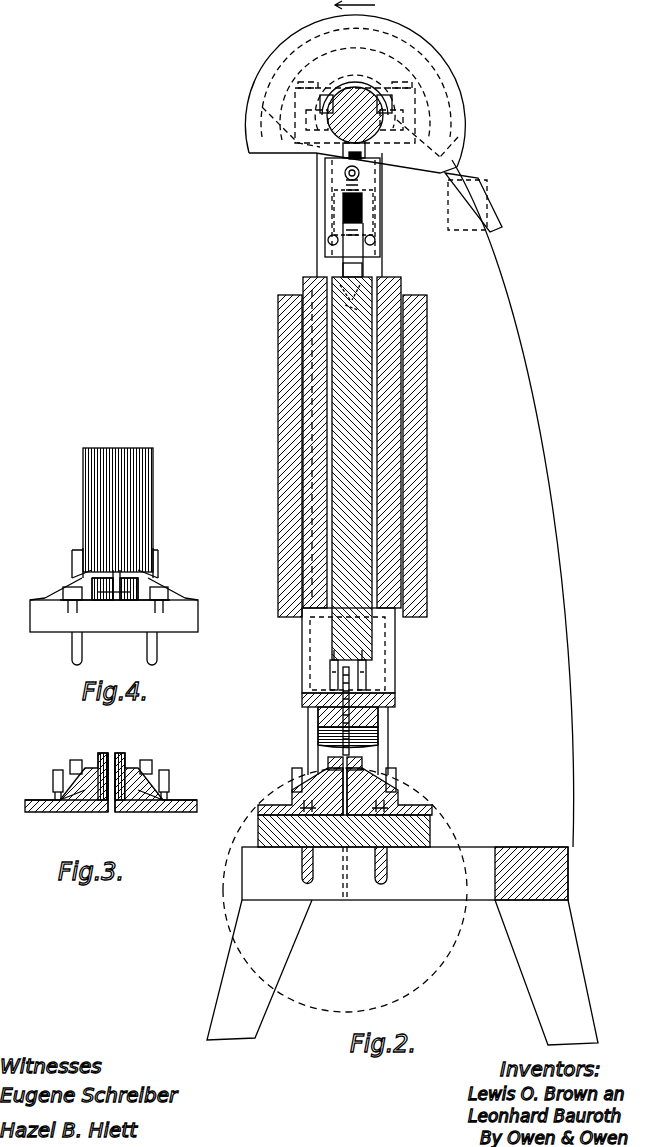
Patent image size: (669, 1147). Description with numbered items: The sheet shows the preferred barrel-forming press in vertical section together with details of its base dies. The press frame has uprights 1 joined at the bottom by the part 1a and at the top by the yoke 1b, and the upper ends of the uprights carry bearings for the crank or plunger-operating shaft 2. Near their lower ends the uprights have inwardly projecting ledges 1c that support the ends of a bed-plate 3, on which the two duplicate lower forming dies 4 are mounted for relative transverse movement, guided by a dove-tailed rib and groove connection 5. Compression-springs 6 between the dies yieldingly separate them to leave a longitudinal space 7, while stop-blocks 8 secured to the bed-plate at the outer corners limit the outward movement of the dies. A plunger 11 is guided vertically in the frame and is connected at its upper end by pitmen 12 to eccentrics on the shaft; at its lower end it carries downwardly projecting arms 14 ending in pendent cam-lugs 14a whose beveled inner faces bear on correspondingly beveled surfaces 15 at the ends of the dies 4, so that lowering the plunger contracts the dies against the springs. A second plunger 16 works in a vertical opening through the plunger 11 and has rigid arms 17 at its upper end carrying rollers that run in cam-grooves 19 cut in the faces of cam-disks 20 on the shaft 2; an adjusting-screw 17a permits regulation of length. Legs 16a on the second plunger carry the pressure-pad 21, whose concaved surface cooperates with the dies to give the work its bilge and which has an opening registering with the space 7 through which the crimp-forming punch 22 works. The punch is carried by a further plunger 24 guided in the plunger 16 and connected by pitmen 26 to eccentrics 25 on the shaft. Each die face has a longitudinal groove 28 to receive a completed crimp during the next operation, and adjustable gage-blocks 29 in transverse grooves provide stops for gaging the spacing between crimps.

In FIG. 2, the uprights 1 is at (513, 503).
In FIG. 2, the lower connecting part 1a is at (510, 857).
In FIG. 2, the yoke 1b is at (488, 209).
In FIG. 2, the ledges 1c is at (402, 946).
In FIG. 2, the crank-shaft 2 is at (336, 135).
In FIG. 2, the bed-plate 3 is at (349, 847).
In FIG. 4, the bed-plate 3 is at (114, 632).
In FIG. 2, the lower forming dies 4 is at (292, 790).
In FIG. 4, the lower forming dies 4 is at (78, 578).
In FIG. 3, the lower forming dies 4 is at (66, 812).
In FIG. 4, the dove-tailed rib and groove connection 5 is at (114, 612).
In FIG. 2, the compression-springs 6 is at (345, 800).
In FIG. 3, the compression-springs 6 is at (111, 812).
In FIG. 2, the longitudinal space 7 is at (350, 778).
In FIG. 4, the longitudinal space 7 is at (112, 594).
In FIG. 3, the longitudinal space 7 is at (112, 756).
In FIG. 2, the stop-blocks 8 is at (344, 865).
In FIG. 4, the stop-blocks 8 is at (68, 597).
In FIG. 2, the plunger 11 is at (427, 422).
In FIG. 2, the pitmen 12 is at (364, 158).
In FIG. 2, the downwardly projecting arms 14 is at (318, 750).
In FIG. 4, the downwardly projecting arms 14 is at (140, 483).
In FIG. 4, the cam-lugs 14a is at (170, 560).
In FIG. 4, the beveled cam surfaces 15 is at (62, 582).
In FIG. 2, the second plunger 16 is at (402, 467).
In FIG. 2, the legs 16a is at (389, 660).
In FIG. 2, the arms 17 is at (327, 257).
In FIG. 2, the adjusting-screw 17a is at (365, 209).
In FIG. 2, the cam-grooves 19 is at (270, 71).
In FIG. 2, the cam-disks 20 is at (359, 92).
In FIG. 2, the pressure-pad 21 is at (368, 717).
In FIG. 2, the crimp-forming punch 22 is at (332, 722).
In FIG. 2, the punch plunger 24 is at (358, 534).
In FIG. 2, the eccentrics 25 is at (330, 683).
In FIG. 2, the pitmen 26 is at (364, 272).
In FIG. 3, the longitudinal groove 28 is at (82, 752).
In FIG. 3, the gage-blocks 29 is at (58, 774).